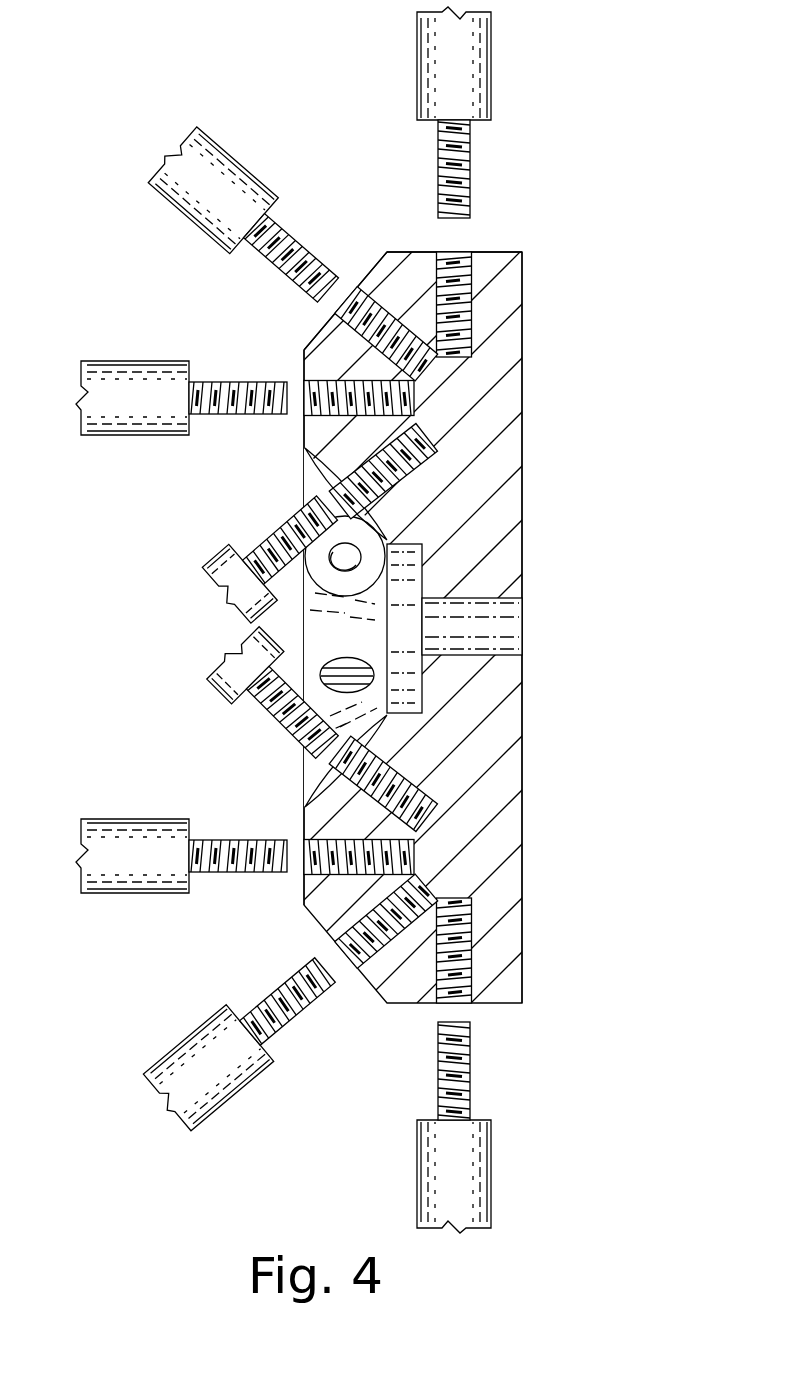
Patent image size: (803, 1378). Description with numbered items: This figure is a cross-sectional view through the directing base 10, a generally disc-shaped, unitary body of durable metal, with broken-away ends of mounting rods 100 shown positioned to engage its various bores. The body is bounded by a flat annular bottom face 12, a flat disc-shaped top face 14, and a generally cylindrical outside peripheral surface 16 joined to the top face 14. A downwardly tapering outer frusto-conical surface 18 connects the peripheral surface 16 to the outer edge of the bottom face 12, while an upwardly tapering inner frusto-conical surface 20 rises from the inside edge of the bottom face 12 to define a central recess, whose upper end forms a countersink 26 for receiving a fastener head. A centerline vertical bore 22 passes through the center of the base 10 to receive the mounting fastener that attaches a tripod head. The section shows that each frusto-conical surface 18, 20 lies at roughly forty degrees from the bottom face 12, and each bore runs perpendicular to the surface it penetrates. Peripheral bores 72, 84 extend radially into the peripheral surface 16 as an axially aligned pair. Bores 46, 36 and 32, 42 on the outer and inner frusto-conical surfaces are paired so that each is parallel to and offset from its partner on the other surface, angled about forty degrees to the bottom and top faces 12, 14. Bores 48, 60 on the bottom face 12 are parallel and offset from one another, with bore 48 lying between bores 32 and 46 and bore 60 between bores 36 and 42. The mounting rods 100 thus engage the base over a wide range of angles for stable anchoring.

The directing base 10 is at (615, 220).
The bottom face 12 is at (304, 438).
The top face 14 is at (523, 423).
The outside peripheral surface 16 is at (503, 252).
The outer frusto-conical surface 18 is at (373, 268).
The inner frusto-conical surface 20 is at (304, 756).
The centerline vertical bore 22 is at (517, 623).
The countersink 26 is at (423, 568).
The center bore 32 is at (340, 490).
The opposite bore 36 is at (330, 775).
The outward and downward directed bore 42 is at (358, 958).
The opposite bore 46 is at (356, 300).
The bore 48 is at (304, 382).
The bore 60 is at (304, 880).
The peripheral bore 72 is at (467, 252).
The peripheral bore 84 is at (465, 997).
The mounting rods 100 is at (418, 48).